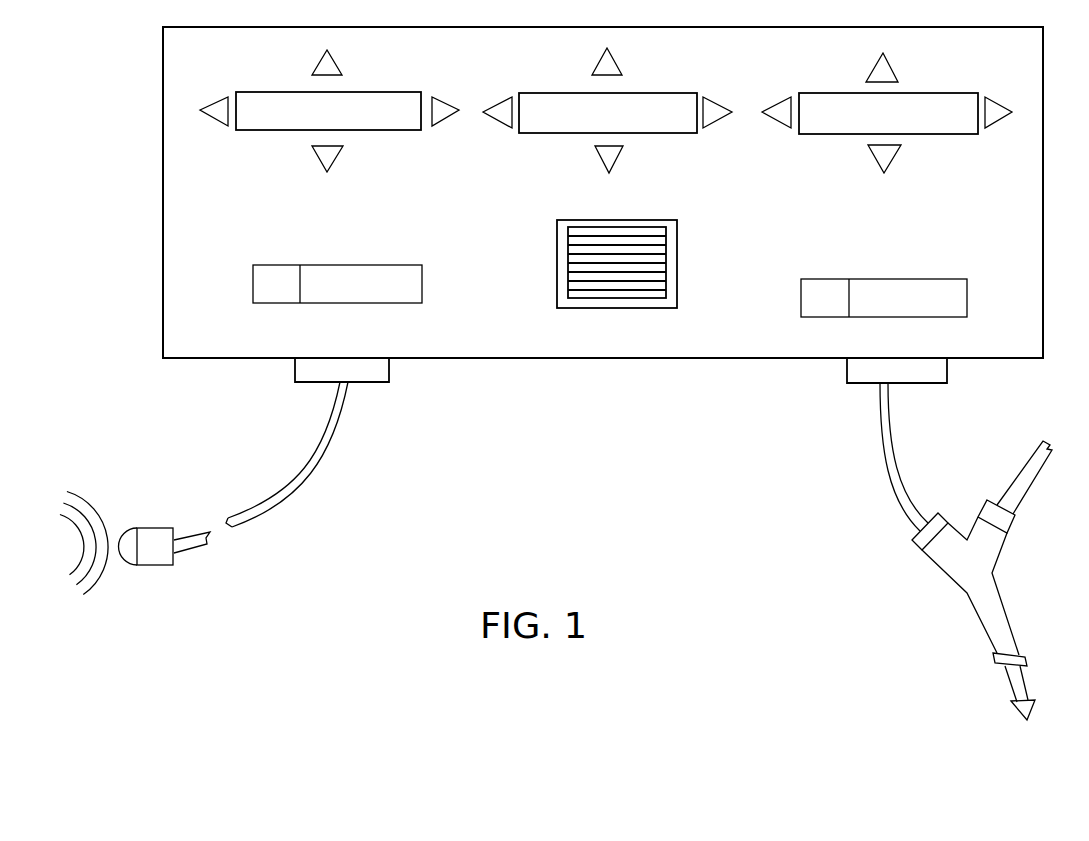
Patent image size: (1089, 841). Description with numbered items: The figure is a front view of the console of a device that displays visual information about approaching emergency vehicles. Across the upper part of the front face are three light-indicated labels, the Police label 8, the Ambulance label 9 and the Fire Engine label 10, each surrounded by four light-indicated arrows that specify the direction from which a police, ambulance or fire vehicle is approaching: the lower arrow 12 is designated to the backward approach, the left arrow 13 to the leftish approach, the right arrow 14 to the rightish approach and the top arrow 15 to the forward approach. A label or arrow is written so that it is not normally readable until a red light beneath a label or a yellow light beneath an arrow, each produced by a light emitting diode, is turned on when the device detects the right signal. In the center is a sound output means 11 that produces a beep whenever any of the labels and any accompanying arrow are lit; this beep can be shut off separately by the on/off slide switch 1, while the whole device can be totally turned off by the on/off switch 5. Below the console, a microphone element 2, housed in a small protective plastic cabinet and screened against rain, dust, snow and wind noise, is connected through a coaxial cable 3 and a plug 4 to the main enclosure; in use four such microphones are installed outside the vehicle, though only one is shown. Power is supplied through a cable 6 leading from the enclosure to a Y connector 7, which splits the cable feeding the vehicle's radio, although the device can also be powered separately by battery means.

The on/off slide switch 1 is at (253, 268).
The microphone element 2 is at (163, 555).
The coaxial cable 3 is at (300, 480).
The plug 4 is at (315, 366).
The on/off switch 5 is at (955, 300).
The power cable 6 is at (883, 467).
The Y connector 7 is at (988, 548).
The Police label 8 is at (277, 92).
The Ambulance label 9 is at (557, 93).
The Fire Engine label 10 is at (829, 93).
The sound output means 11 is at (618, 298).
The lower arrow 12 is at (312, 155).
The left arrow 13 is at (214, 100).
The right arrow 14 is at (996, 101).
The top arrow 15 is at (893, 64).